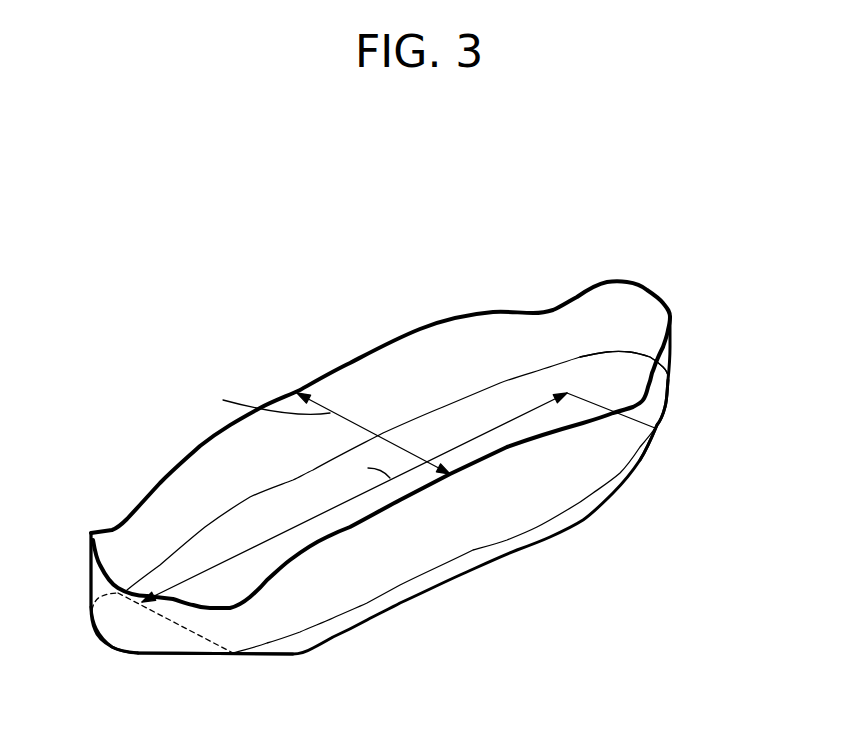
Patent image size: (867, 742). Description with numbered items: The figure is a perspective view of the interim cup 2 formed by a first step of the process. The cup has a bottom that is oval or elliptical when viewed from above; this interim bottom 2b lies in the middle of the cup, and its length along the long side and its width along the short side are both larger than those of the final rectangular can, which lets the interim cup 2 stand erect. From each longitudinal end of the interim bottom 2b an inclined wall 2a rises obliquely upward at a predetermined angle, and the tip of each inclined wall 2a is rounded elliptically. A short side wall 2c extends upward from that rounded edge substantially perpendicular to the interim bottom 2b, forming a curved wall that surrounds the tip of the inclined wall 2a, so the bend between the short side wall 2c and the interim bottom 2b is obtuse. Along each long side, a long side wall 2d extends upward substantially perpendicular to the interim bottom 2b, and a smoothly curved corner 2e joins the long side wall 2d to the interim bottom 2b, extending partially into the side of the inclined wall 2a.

The interim cup 2 is at (578, 263).
The inclined wall 2a is at (620, 363).
The interim bottom 2b is at (445, 430).
The short side wall 2c is at (658, 385).
The long side wall 2d is at (337, 367).
The curved corner 2e is at (460, 567).